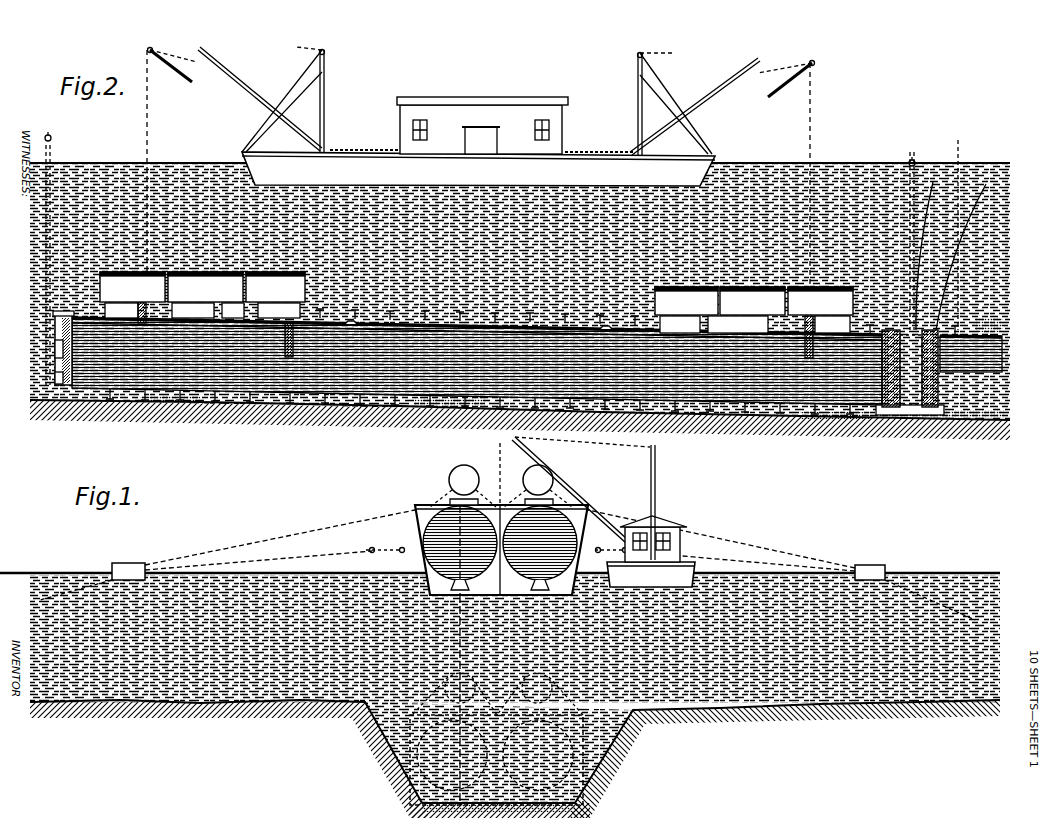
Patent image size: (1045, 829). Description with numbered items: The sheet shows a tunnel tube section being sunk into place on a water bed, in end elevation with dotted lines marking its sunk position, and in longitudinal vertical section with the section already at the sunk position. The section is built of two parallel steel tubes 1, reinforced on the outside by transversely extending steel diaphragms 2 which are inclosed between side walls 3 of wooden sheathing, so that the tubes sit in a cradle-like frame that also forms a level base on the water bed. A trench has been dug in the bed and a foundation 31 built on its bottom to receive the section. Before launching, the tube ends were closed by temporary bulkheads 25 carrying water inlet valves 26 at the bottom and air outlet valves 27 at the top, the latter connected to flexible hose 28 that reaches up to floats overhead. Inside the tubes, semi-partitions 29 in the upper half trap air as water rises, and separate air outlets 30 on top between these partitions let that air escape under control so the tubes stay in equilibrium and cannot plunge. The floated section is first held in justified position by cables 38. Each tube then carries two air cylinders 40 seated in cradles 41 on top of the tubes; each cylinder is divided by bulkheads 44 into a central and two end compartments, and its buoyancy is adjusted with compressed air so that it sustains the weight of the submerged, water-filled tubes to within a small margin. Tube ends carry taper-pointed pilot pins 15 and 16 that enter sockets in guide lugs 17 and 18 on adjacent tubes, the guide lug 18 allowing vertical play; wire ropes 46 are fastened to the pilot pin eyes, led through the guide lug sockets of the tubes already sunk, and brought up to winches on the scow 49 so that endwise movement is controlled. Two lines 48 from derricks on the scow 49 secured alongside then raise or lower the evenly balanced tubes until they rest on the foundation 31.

In FIG. 2, the tube 1 is at (537, 378).
In FIG. 1, the tube 1 is at (434, 520).
In FIG. 2, the diaphragm 2 is at (72, 318).
In FIG. 1, the diaphragm 2 is at (415, 508).
In FIG. 1, the side wall 3 is at (414, 533).
In FIG. 2, the pilot pin 15 is at (930, 249).
In FIG. 2, the pilot pin 16 is at (922, 410).
In FIG. 2, the guide lug 17 is at (967, 249).
In FIG. 2, the guide lug 18 is at (940, 410).
In FIG. 2, the temporary bulkhead 25 is at (58, 345).
In FIG. 2, the water inlet valve 26 is at (58, 378).
In FIG. 2, the air outlet valve 27 is at (58, 325).
In FIG. 2, the flexible hose 28 is at (56, 142).
In FIG. 2, the semi-partition 29 is at (289, 357).
In FIG. 2, the air outlet 30 is at (349, 326).
In FIG. 2, the foundation 31 is at (62, 418).
In FIG. 1, the foundation 31 is at (580, 800).
In FIG. 1, the cable 38 is at (250, 542).
In FIG. 2, the air cylinder 40 is at (476, 302).
In FIG. 1, the air cylinder 40 is at (450, 472).
In FIG. 2, the cradle 41 is at (141, 323).
In FIG. 2, the bulkhead 44 is at (476, 302).
In FIG. 2, the wire rope 46 is at (960, 160).
In FIG. 2, the line 48 is at (149, 118).
In FIG. 1, the line 48 is at (500, 447).
In FIG. 2, the scow 49 is at (479, 116).
In FIG. 1, the scow 49 is at (603, 512).